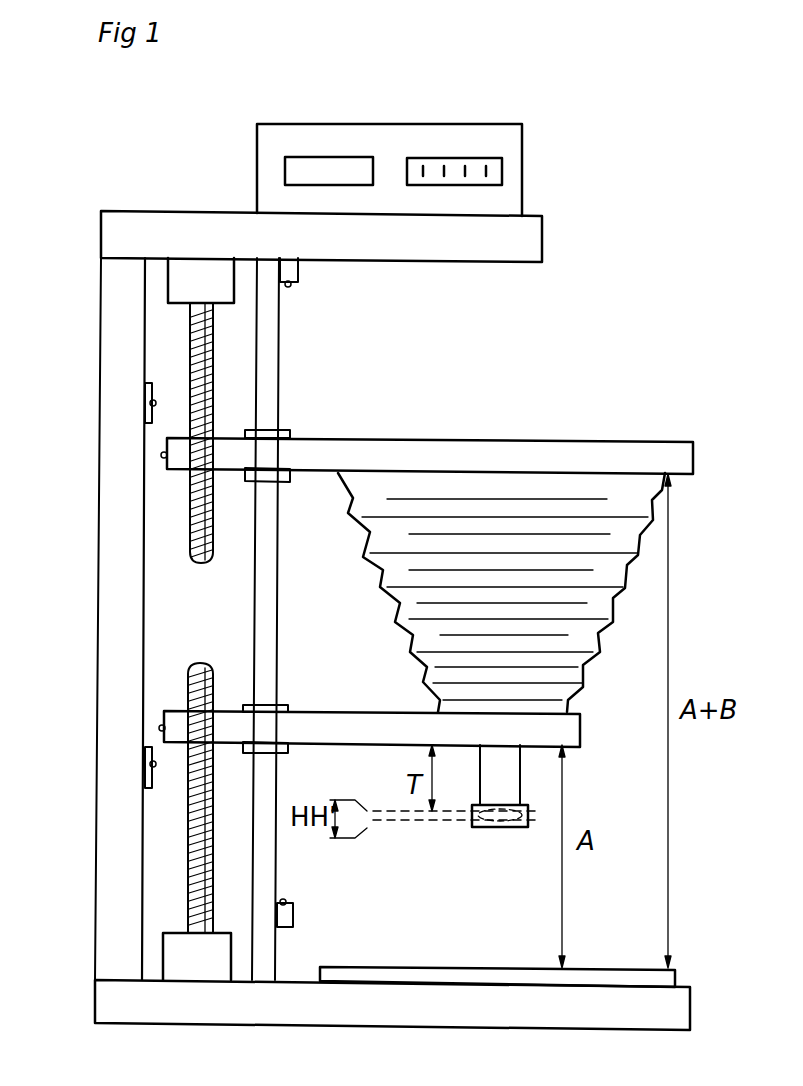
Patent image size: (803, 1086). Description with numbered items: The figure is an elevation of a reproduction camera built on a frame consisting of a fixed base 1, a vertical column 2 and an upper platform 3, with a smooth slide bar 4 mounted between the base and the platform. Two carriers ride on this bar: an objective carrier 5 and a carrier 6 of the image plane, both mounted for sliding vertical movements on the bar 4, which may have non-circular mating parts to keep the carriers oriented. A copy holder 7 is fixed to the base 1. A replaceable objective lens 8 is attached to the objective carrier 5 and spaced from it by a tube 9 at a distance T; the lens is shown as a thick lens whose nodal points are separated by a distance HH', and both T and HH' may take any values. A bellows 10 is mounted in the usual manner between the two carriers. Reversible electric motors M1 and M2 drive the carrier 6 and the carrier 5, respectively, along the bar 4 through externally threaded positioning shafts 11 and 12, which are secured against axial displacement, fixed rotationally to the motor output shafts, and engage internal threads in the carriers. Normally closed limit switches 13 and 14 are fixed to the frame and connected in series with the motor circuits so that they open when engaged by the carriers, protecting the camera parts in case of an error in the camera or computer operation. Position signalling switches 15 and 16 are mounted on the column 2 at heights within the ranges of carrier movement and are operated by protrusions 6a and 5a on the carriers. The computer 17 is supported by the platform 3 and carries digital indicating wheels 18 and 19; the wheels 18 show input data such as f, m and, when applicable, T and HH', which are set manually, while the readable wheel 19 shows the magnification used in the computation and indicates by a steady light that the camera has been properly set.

The fixed base 1 is at (333, 1013).
The vertical column 2 is at (110, 557).
The upper platform 3 is at (452, 252).
The smooth slide bar 4 is at (266, 600).
The objective carrier 5 is at (572, 728).
The protrusion 5a is at (159, 728).
The carrier of the image plane 6 is at (553, 462).
The protrusion 6a is at (161, 455).
The copy holder 7 is at (425, 982).
The replaceable objective lens 8 is at (481, 813).
The tube 9 is at (492, 771).
The bellows 10 is at (365, 490).
The externally threaded positioning shaft 11 is at (200, 565).
The externally threaded positioning shaft 12 is at (197, 665).
The normally closed limit switch 13 is at (299, 283).
The normally closed limit switch 14 is at (295, 915).
The position signalling switch 15 is at (153, 398).
The position signalling switch 16 is at (150, 785).
The computer 17 is at (375, 146).
The digital indicating wheels 18 is at (470, 162).
The readable wheel 19 is at (295, 165).
The reversible electric motor M1 is at (190, 275).
The reversible electric motor M2 is at (178, 960).